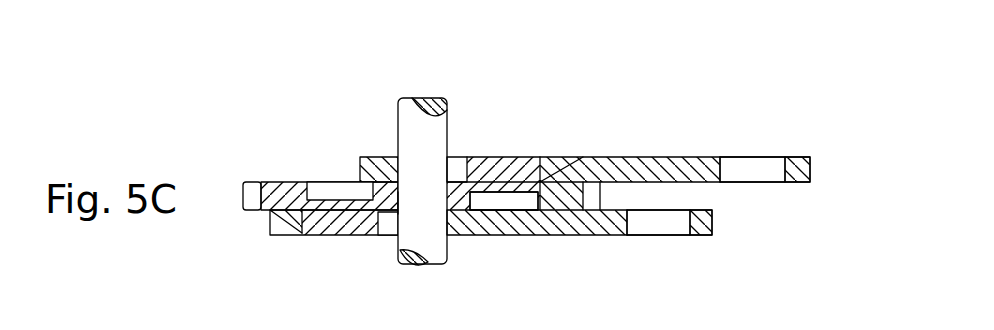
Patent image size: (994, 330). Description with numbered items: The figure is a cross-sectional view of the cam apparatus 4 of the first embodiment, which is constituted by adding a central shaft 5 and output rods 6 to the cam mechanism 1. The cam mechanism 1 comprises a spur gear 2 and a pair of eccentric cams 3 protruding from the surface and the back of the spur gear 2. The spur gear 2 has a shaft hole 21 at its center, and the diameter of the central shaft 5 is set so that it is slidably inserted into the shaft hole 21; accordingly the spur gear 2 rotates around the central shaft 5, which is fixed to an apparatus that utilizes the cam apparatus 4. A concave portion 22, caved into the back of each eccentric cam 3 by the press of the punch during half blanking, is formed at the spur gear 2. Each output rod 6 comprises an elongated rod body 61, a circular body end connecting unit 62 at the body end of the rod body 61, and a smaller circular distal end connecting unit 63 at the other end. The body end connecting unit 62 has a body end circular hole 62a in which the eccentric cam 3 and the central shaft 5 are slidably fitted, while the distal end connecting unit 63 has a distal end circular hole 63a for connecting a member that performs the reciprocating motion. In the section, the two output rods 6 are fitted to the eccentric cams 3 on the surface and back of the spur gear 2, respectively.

The cam mechanism 1 is at (608, 101).
The spur gear 2 is at (588, 156).
The eccentric cam 3 is at (342, 233).
The cam apparatus 4 is at (336, 133).
The central shaft 5 is at (441, 123).
The output rod 6 is at (811, 170).
The shaft hole 21 is at (398, 203).
The concave portion 22 is at (315, 188).
The rod body 61 is at (660, 158).
The body end connecting unit 62 is at (372, 156).
The body end circular hole 62a is at (388, 237).
The distal end connecting unit 63 is at (803, 158).
The distal end circular hole 63a is at (753, 162).